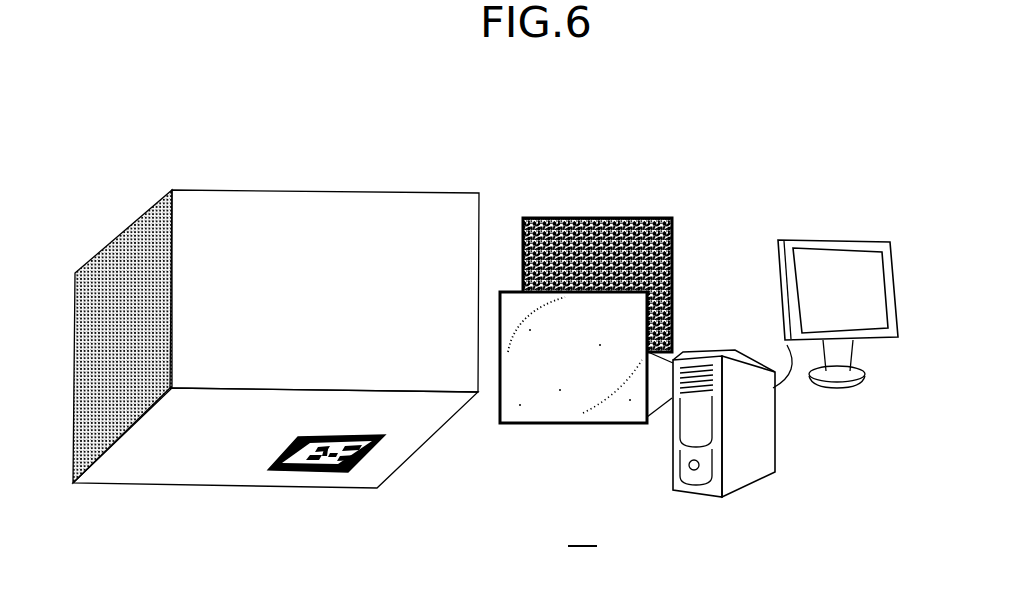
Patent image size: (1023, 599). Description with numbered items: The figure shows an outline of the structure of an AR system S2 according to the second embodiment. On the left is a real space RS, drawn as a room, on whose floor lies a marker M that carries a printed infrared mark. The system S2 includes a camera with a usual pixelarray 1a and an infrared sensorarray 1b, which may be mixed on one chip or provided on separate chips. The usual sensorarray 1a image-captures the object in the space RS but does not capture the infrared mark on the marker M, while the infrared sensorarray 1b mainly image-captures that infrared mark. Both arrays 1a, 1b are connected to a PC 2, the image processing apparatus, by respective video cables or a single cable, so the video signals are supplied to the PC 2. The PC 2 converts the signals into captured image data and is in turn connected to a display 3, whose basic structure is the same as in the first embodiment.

The space RS is at (245, 210).
The marker M is at (329, 451).
The usual pixelarray 1a is at (585, 217).
The infrared sensorarray 1b is at (568, 424).
The PC 2 is at (693, 357).
The display 3 is at (860, 239).
The AR system S2 is at (744, 346).